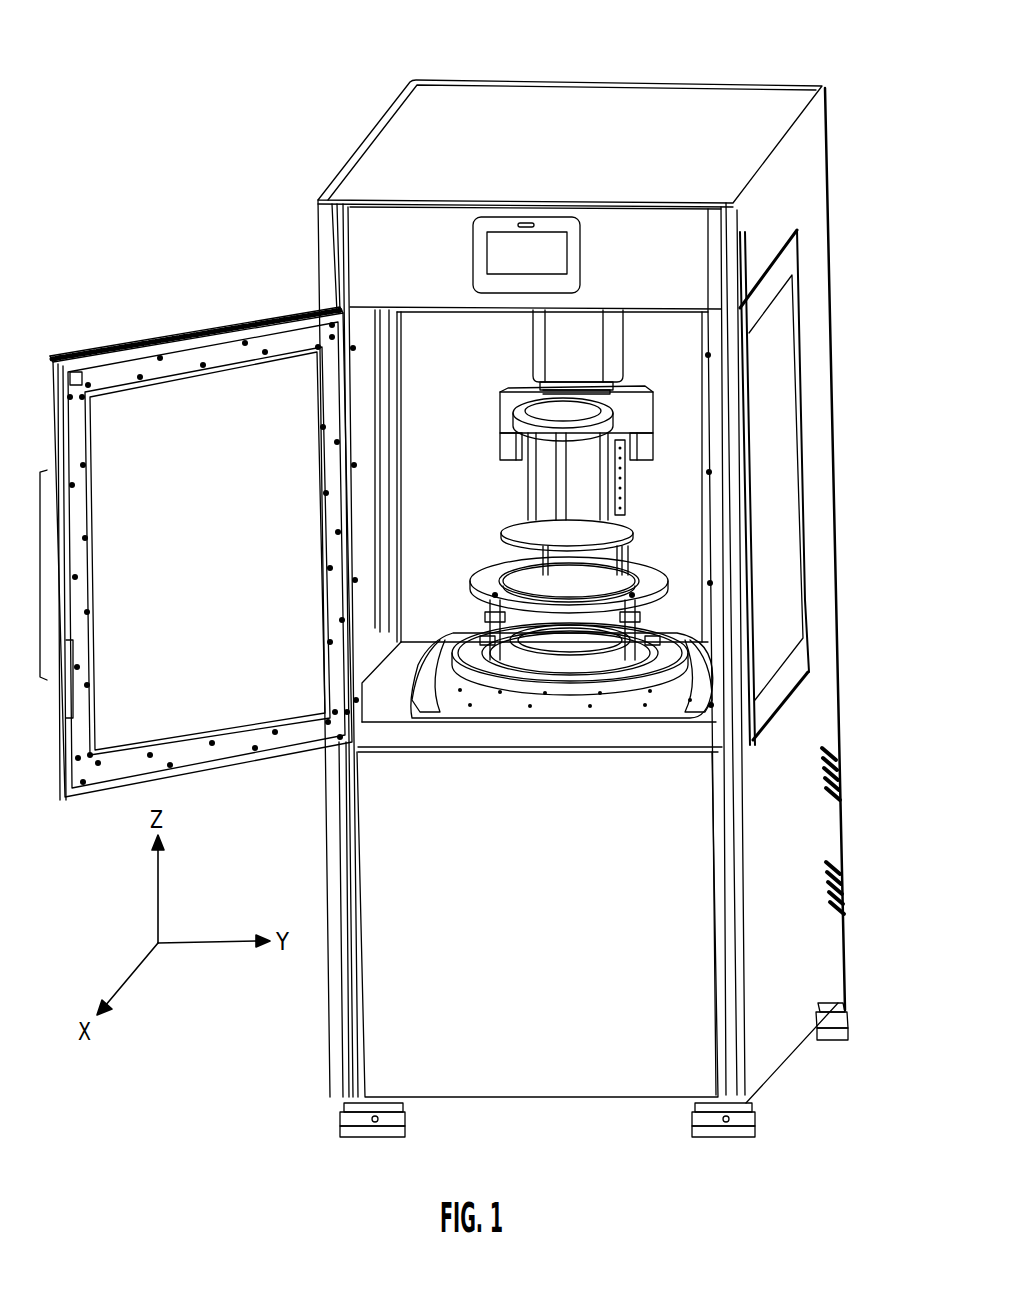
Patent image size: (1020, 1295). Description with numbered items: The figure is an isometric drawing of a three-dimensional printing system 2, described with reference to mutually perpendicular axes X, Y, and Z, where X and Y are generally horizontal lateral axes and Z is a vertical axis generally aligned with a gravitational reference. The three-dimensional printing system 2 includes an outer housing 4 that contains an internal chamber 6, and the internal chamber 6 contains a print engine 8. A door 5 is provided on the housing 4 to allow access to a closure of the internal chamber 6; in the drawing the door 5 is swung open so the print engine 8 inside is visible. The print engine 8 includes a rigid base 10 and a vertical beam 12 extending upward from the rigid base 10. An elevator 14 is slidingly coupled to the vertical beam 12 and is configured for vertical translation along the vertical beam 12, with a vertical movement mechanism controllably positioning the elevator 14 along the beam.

The three-dimensional (3D) printing system 2 is at (846, 66).
The outer housing 4 is at (817, 473).
The door 5 is at (117, 370).
The internal chamber 6 is at (680, 566).
The print engine 8 is at (466, 382).
The rigid base 10 is at (655, 697).
The vertical beam 12 is at (574, 360).
The elevator 14 is at (608, 412).